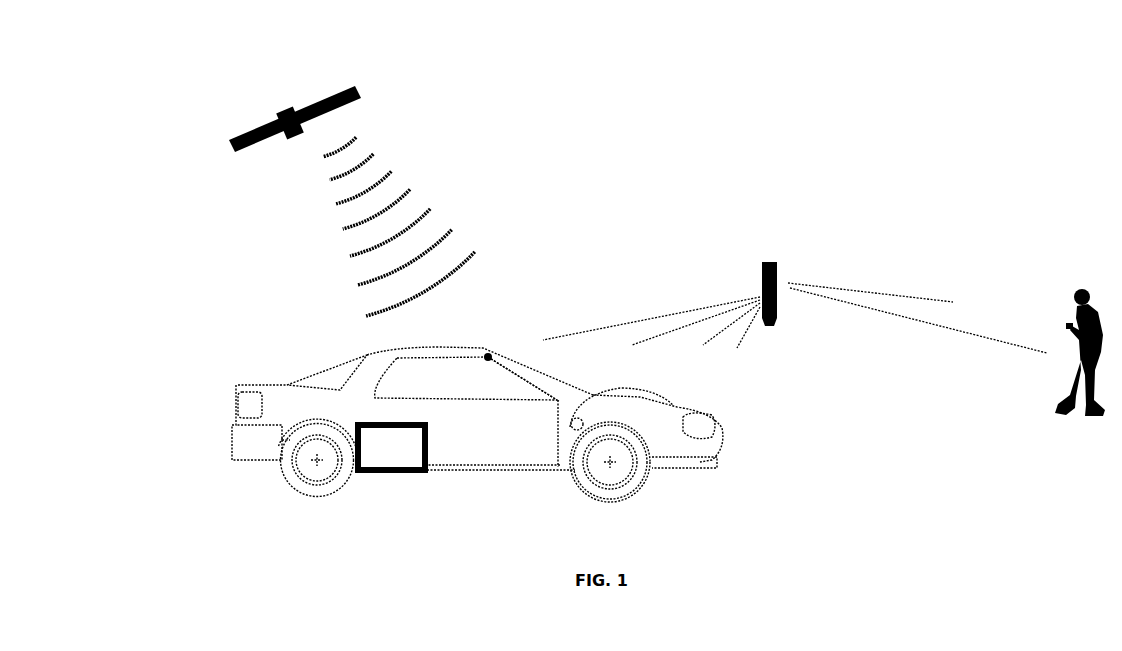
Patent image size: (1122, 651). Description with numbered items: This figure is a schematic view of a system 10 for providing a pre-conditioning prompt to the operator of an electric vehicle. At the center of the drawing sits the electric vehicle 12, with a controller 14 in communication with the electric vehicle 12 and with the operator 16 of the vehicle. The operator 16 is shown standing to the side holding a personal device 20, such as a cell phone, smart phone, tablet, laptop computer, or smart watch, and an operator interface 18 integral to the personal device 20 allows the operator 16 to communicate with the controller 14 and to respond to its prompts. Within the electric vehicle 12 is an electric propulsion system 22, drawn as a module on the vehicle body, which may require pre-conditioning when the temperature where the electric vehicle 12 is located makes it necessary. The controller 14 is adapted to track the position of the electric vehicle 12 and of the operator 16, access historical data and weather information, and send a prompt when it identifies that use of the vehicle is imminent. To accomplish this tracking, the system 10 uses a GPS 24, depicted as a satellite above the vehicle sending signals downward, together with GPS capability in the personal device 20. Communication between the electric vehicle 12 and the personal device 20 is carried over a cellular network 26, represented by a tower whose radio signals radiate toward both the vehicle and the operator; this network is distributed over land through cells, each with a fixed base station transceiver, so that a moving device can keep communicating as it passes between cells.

The system 10 is at (601, 243).
The electric vehicle 12 is at (700, 410).
The controller 14 is at (715, 447).
The operator 16 is at (1098, 303).
The operator interface 18 is at (1005, 259).
The personal device 20 is at (1070, 327).
The electric propulsion system 22 is at (397, 468).
The GPS 24 is at (263, 120).
The cellular network 26 is at (768, 260).